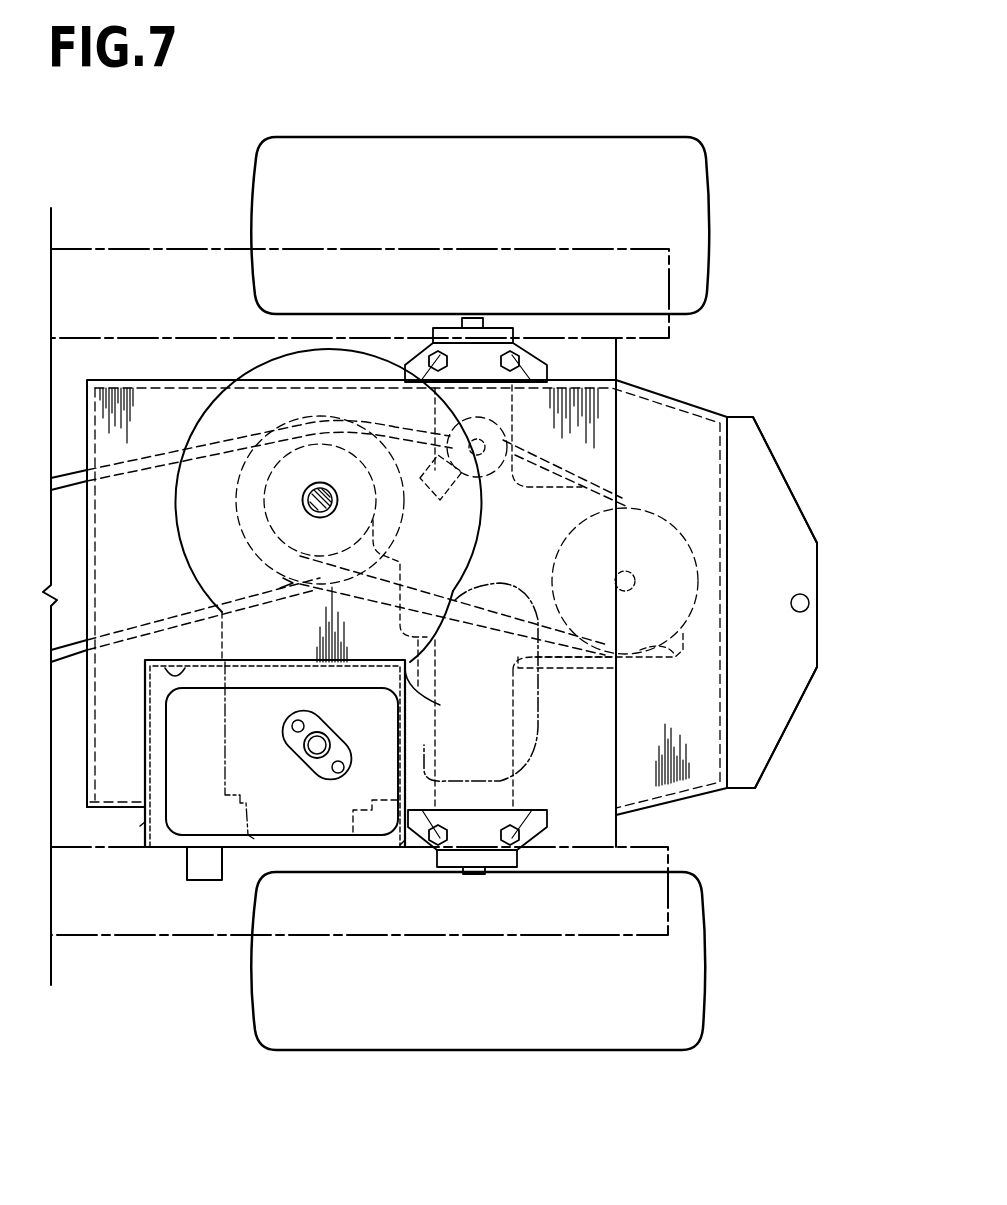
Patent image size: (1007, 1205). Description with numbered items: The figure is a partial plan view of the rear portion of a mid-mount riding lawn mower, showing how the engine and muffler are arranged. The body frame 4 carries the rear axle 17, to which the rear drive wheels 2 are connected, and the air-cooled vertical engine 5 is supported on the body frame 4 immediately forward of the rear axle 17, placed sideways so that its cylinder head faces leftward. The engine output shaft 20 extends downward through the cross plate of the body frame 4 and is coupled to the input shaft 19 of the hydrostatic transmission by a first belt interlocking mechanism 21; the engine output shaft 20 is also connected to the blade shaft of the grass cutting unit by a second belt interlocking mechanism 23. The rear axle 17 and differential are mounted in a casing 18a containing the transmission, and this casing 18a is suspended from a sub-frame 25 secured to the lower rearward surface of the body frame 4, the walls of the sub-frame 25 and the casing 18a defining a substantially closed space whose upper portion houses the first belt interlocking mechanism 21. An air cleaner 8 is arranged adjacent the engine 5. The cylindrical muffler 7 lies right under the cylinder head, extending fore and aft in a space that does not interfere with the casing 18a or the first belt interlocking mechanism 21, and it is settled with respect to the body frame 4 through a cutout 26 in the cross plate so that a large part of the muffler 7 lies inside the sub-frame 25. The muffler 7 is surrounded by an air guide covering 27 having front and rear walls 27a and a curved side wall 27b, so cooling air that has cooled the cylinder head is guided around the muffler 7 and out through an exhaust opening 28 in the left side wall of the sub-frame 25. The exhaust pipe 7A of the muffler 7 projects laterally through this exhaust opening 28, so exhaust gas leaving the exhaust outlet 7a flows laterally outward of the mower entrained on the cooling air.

The rear drive wheels 2 is at (668, 152).
The body frame 4 is at (192, 248).
The vertical engine 5 is at (266, 350).
The rear axle 17 is at (481, 322).
The sub-frame 25 is at (706, 410).
The first belt interlocking mechanism 21 is at (638, 494).
The input shaft 19 is at (633, 578).
The engine output shaft 20 is at (302, 503).
The casing 18a is at (660, 657).
The air cleaner 8 is at (540, 690).
The air guide covering 27 is at (248, 657).
The front and rear walls 27a is at (140, 826).
The curved side wall 27b is at (410, 680).
The cutout 26 is at (168, 660).
The exhaust opening 28 is at (160, 852).
The second belt interlocking mechanism 23 is at (112, 648).
The muffler 7 is at (170, 778).
The exhaust pipe 7A is at (222, 866).
The exhaust outlet 7a is at (203, 883).